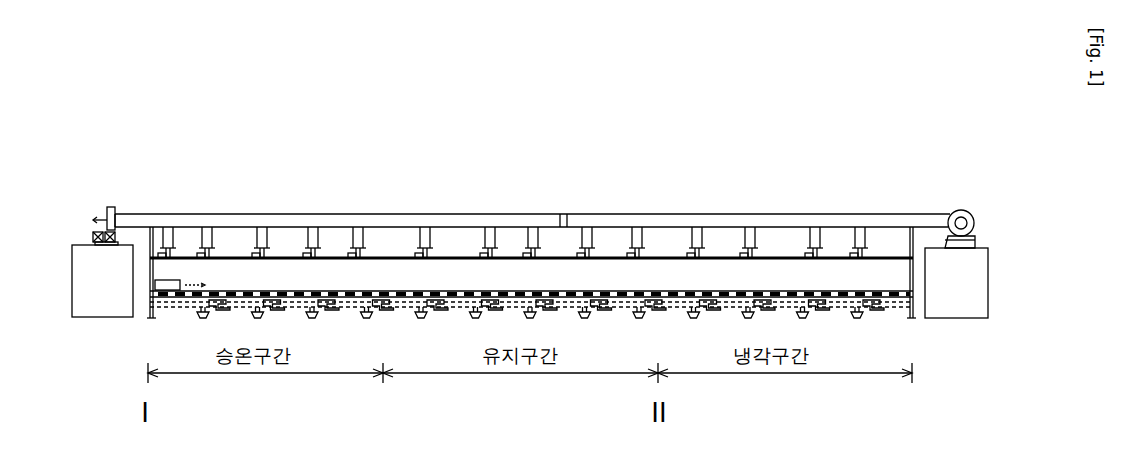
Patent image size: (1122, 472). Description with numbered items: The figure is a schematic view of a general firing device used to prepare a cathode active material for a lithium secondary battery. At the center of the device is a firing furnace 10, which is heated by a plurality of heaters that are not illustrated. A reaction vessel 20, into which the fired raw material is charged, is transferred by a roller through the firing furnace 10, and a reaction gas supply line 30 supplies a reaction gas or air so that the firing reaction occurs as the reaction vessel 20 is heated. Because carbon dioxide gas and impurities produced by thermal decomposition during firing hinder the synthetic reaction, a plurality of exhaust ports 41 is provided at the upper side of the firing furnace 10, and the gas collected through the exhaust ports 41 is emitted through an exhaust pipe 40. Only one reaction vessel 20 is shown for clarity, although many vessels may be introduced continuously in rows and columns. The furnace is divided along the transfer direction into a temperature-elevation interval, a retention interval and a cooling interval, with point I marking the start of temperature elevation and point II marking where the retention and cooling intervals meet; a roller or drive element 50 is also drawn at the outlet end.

The firing furnace 10 is at (185, 250).
The reaction vessel 20 is at (183, 283).
The reaction gas supply line 30 is at (173, 305).
The exhaust pipe 40 is at (667, 217).
The exhaust port 41 is at (425, 254).
The drive pulley 50 is at (978, 212).